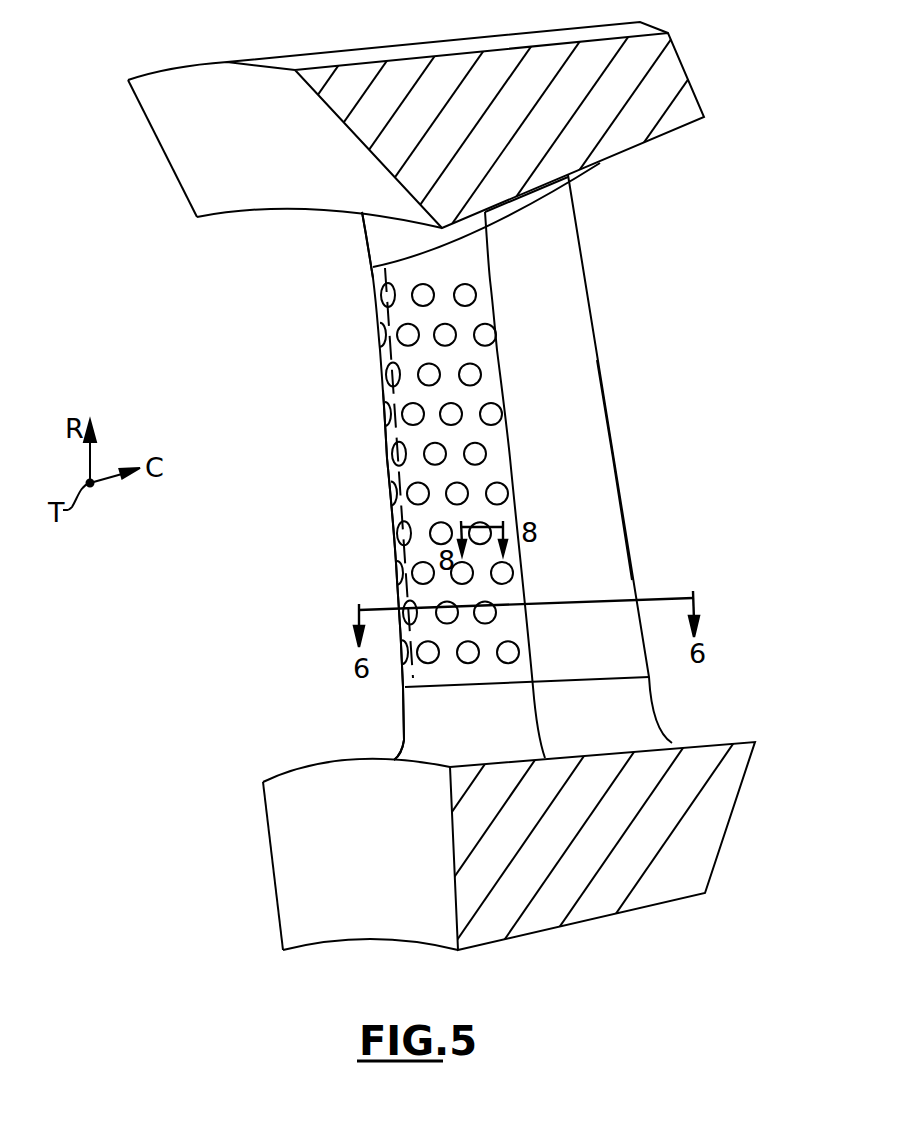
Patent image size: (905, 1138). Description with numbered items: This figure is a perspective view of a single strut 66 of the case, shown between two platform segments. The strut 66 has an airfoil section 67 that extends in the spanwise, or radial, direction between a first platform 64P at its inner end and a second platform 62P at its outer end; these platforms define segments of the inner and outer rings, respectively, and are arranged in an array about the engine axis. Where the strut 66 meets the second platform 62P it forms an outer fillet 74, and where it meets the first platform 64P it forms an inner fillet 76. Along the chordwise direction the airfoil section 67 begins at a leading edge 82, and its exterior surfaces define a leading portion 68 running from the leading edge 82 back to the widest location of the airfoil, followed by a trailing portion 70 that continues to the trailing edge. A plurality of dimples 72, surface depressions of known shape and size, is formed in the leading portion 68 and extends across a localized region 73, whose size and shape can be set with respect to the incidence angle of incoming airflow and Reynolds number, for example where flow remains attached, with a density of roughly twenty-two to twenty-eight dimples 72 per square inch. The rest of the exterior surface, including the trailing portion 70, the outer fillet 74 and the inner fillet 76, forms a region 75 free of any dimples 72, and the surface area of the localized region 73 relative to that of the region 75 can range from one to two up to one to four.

The second platform 62P is at (435, 48).
The first platform 64P is at (717, 860).
The strut 66 is at (562, 302).
The airfoil section 67 is at (353, 502).
The leading portion 68 is at (387, 468).
The trailing portion 70 is at (622, 503).
The dimples 72 is at (424, 577).
The localized region 73 is at (361, 588).
The outer fillet 74 is at (378, 232).
The region free of dimples 75 is at (641, 416).
The inner fillet 76 is at (410, 740).
The leading edge 82 is at (392, 393).